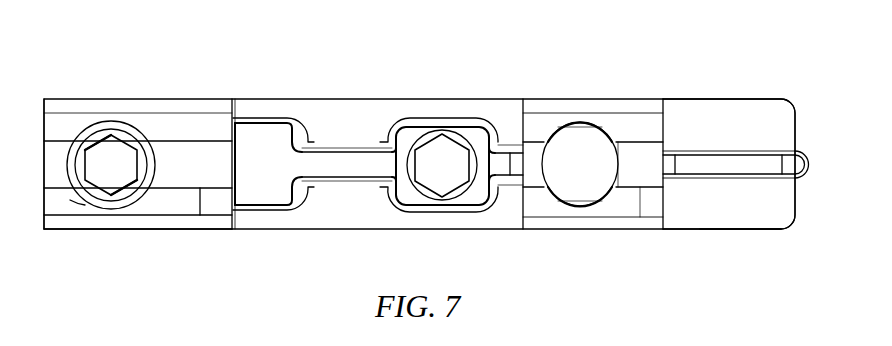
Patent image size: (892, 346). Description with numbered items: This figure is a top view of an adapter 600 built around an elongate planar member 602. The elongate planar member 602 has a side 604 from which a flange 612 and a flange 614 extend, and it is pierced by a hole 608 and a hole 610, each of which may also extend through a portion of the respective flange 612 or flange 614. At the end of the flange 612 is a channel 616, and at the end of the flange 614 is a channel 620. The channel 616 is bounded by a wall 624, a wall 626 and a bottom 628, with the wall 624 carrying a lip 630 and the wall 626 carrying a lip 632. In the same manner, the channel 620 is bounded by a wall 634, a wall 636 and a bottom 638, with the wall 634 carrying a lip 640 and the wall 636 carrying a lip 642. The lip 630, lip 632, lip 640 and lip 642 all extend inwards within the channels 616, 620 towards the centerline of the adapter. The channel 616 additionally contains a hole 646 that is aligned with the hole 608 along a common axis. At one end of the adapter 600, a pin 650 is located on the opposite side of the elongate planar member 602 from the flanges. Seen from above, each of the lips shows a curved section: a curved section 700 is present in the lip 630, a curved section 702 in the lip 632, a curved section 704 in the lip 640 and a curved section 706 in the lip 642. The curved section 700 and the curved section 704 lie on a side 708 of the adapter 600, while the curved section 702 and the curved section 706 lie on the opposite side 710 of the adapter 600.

The adapter 600 is at (457, 74).
The elongate planar member 602 is at (767, 115).
The side 604 is at (748, 215).
The hole 608 is at (102, 163).
The hole 610 is at (435, 153).
The flange 612 is at (165, 230).
The flange 614 is at (653, 230).
The channel 616 is at (170, 150).
The channel 620 is at (642, 170).
The wall 624 is at (228, 98).
The wall 626 is at (114, 230).
The bottom 628 is at (53, 167).
The lip 630 is at (190, 103).
The lip 632 is at (213, 205).
The wall 634 is at (593, 110).
The wall 636 is at (593, 230).
The bottom 638 is at (538, 157).
The lip 640 is at (637, 122).
The lip 642 is at (650, 198).
The hole 646 is at (85, 150).
The pin 650 is at (806, 178).
The curved section 700 is at (128, 127).
The curved section 702 is at (82, 203).
The curved section 704 is at (570, 122).
The curved section 706 is at (553, 198).
The side 708 is at (315, 99).
The side 710 is at (411, 230).